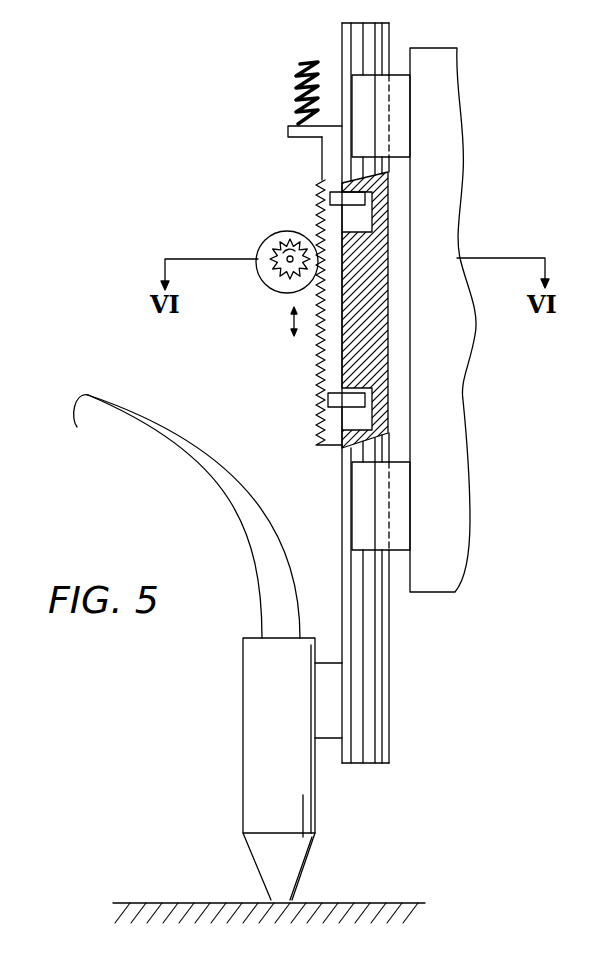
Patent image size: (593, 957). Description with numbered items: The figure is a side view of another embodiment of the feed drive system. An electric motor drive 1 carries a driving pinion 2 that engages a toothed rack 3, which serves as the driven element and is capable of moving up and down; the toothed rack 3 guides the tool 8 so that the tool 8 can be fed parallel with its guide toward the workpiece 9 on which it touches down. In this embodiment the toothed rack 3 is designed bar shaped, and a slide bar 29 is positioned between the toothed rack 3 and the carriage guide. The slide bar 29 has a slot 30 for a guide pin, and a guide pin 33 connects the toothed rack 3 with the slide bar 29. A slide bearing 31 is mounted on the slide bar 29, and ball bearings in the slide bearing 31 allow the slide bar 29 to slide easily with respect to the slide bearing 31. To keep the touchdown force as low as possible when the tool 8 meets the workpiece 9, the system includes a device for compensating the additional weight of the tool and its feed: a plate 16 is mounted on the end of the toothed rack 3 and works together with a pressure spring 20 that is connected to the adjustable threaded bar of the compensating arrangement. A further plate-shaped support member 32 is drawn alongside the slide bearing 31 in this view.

The electric motor drive 1 is at (266, 238).
The driving pinion 2 is at (287, 272).
The toothed rack 3 is at (322, 367).
The tool 8 is at (303, 818).
The workpiece 9 is at (393, 903).
The plate 16 is at (302, 137).
The pressure spring 20 is at (298, 80).
The slide bar 29 is at (375, 737).
The slot 30 is at (362, 223).
The slide bearing 31 is at (400, 119).
The support plate 32 is at (430, 580).
The guide pin 33 is at (357, 199).